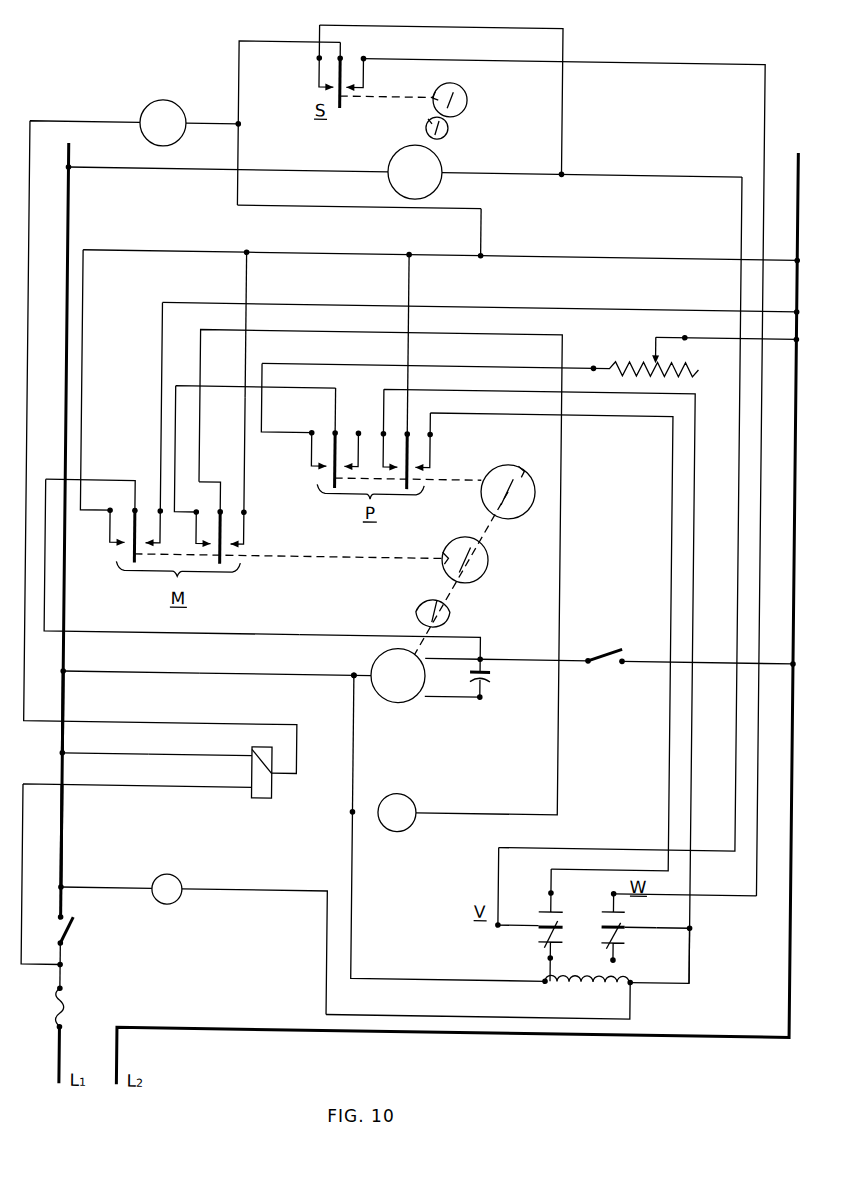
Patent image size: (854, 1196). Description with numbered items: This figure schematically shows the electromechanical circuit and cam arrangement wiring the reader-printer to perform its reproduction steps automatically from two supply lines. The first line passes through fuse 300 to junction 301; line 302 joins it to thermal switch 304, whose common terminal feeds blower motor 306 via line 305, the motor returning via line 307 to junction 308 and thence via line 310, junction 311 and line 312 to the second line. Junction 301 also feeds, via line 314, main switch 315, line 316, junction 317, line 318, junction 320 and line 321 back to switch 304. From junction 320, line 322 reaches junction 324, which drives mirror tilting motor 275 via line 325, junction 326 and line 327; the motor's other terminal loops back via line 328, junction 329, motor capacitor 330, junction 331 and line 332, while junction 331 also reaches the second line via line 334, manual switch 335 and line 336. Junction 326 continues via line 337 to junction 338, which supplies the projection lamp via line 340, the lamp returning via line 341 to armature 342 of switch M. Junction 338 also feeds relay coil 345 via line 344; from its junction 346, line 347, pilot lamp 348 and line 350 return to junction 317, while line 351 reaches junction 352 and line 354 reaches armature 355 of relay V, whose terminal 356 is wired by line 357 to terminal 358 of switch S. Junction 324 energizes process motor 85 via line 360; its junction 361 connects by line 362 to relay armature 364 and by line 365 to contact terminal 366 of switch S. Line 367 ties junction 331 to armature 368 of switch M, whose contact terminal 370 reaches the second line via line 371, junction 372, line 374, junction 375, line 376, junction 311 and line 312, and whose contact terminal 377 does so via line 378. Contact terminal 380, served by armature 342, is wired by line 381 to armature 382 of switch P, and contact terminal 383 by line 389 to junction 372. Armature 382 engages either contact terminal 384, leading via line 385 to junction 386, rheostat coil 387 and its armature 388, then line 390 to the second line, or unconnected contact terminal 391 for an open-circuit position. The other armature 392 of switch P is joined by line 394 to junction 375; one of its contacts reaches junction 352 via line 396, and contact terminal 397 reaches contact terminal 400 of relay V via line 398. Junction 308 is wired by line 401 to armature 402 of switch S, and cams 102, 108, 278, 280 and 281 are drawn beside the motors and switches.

The process motor 85 is at (436, 161).
The cam 102 is at (461, 90).
The cam follower 108 is at (444, 126).
The mirror tilting motor 275 is at (415, 700).
The cam 278 is at (488, 546).
The cam 280 is at (520, 467).
The cam lobe 281 is at (451, 608).
The fuse 300 is at (68, 1010).
The junction 301 is at (66, 972).
The line 302 is at (39, 787).
The thermally controlled switch 304 is at (262, 802).
The line 305 is at (30, 328).
The blower motor 306 is at (150, 109).
The line 307 is at (204, 116).
The junction 308 is at (236, 128).
The line 310 is at (268, 207).
The junction 311 is at (480, 253).
The line 312 is at (568, 254).
The line 314 is at (66, 958).
The main switch 315 is at (70, 936).
The line 316 is at (68, 908).
The junction 317 is at (68, 890).
The line 318 is at (66, 834).
The junction 320 is at (68, 758).
The line 321 is at (172, 757).
The line 322 is at (66, 707).
The junction 324 is at (68, 676).
The line 325 is at (222, 676).
The junction 326 is at (353, 674).
The line 327 is at (360, 680).
The line 328 is at (440, 696).
The junction 329 is at (484, 696).
The motor capacitor 330 is at (492, 679).
The junction 331 is at (482, 657).
The line 332 is at (432, 659).
The line 334 is at (523, 657).
The manual switch 335 is at (601, 653).
The line 336 is at (706, 658).
The line 337 is at (357, 748).
The junction 338 is at (360, 810).
The line 340 is at (372, 818).
The line 341 is at (438, 333).
The armature 342 is at (221, 500).
The line 344 is at (357, 890).
The relay coil 345 is at (582, 984).
The junction 346 is at (638, 983).
The line 347 is at (638, 1010).
The pilot lamp 348 is at (194, 886).
The line 350 is at (136, 890).
The line 351 is at (696, 954).
The junction 352 is at (696, 923).
The line 354 is at (666, 930).
The armature 355 is at (630, 926).
The terminal 356 is at (613, 893).
The line 357 is at (706, 891).
The terminal 358 is at (362, 66).
The line 360 is at (66, 618).
The junction 361 is at (562, 172).
The line 362 is at (742, 172).
The armature 364 is at (501, 926).
The line 365 is at (559, 85).
The contact terminal 366 is at (311, 62).
The line 367 is at (300, 636).
The armature 368 is at (132, 513).
The contact terminal 370 is at (108, 517).
The line 371 is at (82, 321).
The junction 372 is at (240, 253).
The line 374 is at (338, 253).
The junction 375 is at (404, 253).
The line 376 is at (446, 253).
The contact terminal 377 is at (158, 501).
The line 378 is at (162, 318).
The contact terminal 380 is at (194, 515).
The line 381 is at (215, 388).
The armature 382 is at (330, 431).
The contact terminal 383 is at (247, 515).
The contact terminal 384 is at (309, 433).
The line 385 is at (458, 365).
The junction 386 is at (589, 363).
The rheostat coil 387 is at (625, 362).
The armature 388 is at (651, 346).
The line 389 is at (246, 281).
The line 390 is at (675, 334).
The contact terminal 391 is at (357, 430).
The armature 392 is at (409, 432).
The line 394 is at (408, 279).
The line 396 is at (488, 390).
The contact terminal 397 is at (432, 435).
The line 398 is at (488, 413).
The contact terminal 400 is at (550, 893).
The line 401 is at (262, 42).
The armature 402 is at (338, 58).